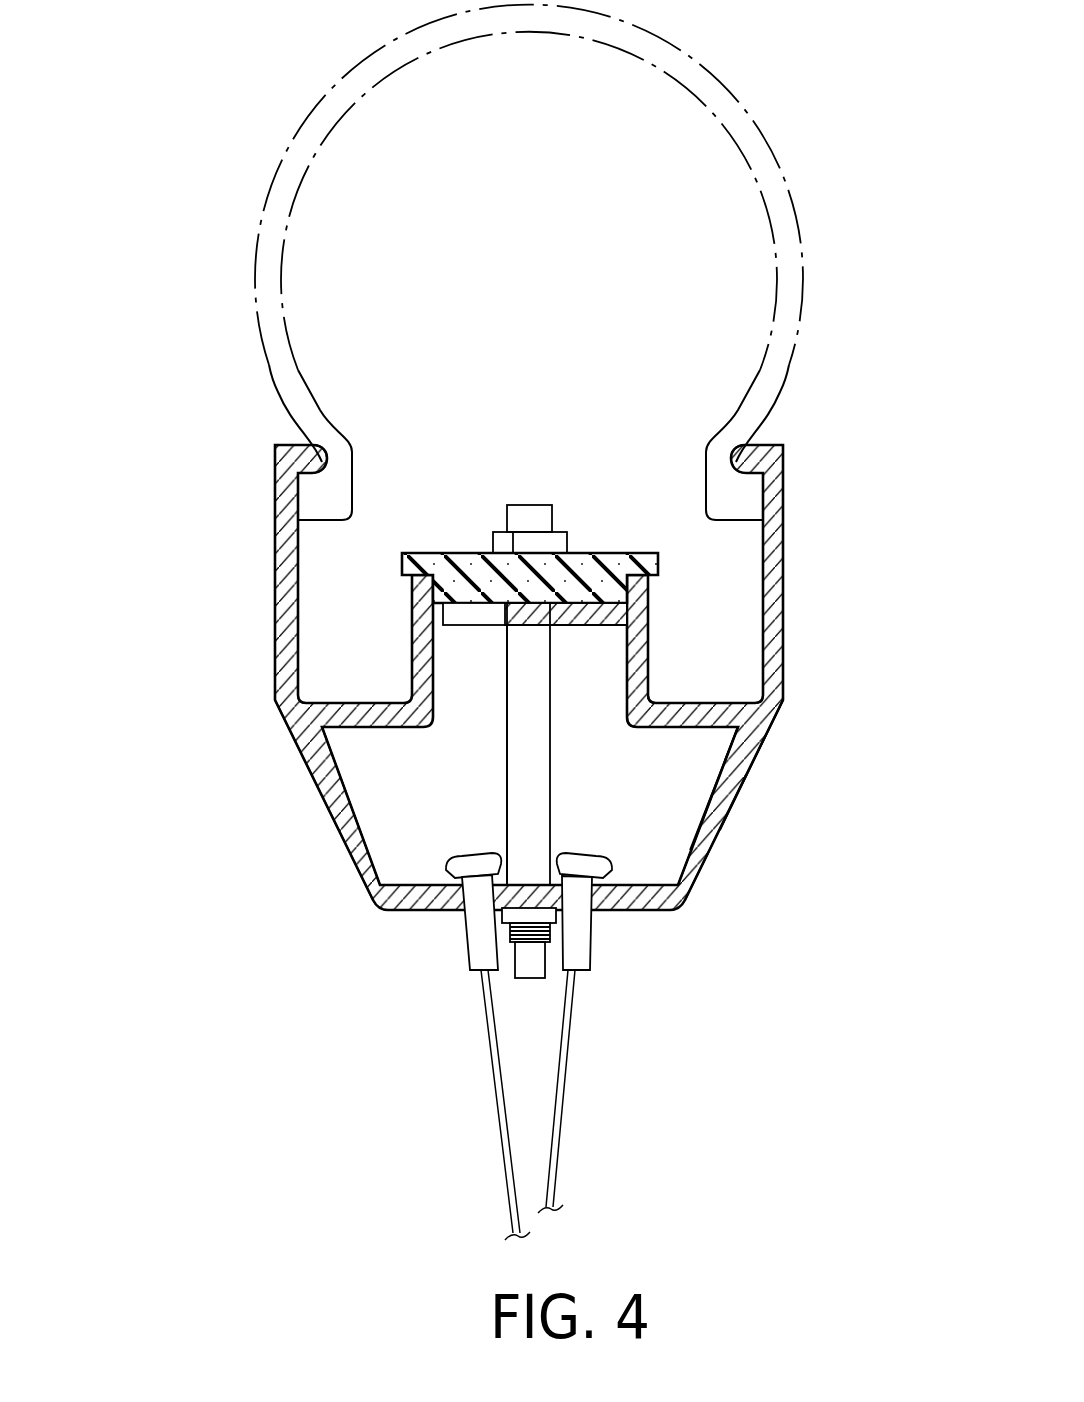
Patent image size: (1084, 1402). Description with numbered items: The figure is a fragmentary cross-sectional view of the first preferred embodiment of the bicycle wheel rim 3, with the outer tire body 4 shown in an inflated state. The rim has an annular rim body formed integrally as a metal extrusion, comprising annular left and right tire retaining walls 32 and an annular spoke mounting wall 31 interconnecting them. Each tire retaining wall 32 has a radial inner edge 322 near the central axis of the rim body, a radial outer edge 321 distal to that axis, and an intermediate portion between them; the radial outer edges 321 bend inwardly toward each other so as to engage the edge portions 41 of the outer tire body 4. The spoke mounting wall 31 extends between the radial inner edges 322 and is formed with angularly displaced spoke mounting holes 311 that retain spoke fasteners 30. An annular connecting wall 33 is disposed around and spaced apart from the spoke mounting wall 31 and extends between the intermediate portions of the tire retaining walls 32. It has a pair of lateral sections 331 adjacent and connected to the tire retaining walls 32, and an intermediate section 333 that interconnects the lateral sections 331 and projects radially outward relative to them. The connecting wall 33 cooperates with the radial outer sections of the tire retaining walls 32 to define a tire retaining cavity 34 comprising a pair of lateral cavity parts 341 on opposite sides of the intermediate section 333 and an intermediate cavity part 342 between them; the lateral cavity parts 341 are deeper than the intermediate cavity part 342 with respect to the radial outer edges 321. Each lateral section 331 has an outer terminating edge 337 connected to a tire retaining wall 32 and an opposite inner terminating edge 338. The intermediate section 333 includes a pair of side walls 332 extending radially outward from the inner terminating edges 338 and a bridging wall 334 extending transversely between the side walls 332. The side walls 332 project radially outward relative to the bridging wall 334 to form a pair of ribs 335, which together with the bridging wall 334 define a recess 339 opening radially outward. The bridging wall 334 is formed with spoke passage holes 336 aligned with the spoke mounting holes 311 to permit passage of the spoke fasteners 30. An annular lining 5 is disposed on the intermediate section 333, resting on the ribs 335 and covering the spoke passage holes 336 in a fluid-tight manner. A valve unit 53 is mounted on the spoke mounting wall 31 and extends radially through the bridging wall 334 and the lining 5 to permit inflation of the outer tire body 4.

The bicycle wheel rim 3 is at (805, 598).
The spoke fasteners 30 is at (483, 943).
The spoke mounting wall 31 is at (622, 897).
The spoke mounting holes 311 is at (455, 890).
The tire retaining walls 32 is at (287, 600).
The radial outer edge 321 is at (280, 447).
The radial inner edge 322 is at (700, 870).
The connecting wall 33 is at (642, 723).
The lateral sections 331 is at (370, 717).
The side walls 332 is at (420, 658).
The intermediate section 333 is at (490, 625).
The bridging wall 334 is at (655, 556).
The ribs 335 is at (407, 585).
The spoke passage holes 336 is at (445, 612).
The outer terminating edge 337 is at (733, 717).
The inner terminating edge 338 is at (693, 690).
The recess 339 is at (455, 553).
The tire retaining cavity 34 is at (568, 503).
The lateral cavity parts 341 is at (347, 683).
The intermediate cavity part 342 is at (607, 550).
The outer tire body 4 is at (733, 112).
The edge portions 41 is at (318, 497).
The annular lining 5 is at (587, 537).
The valve unit 53 is at (522, 935).